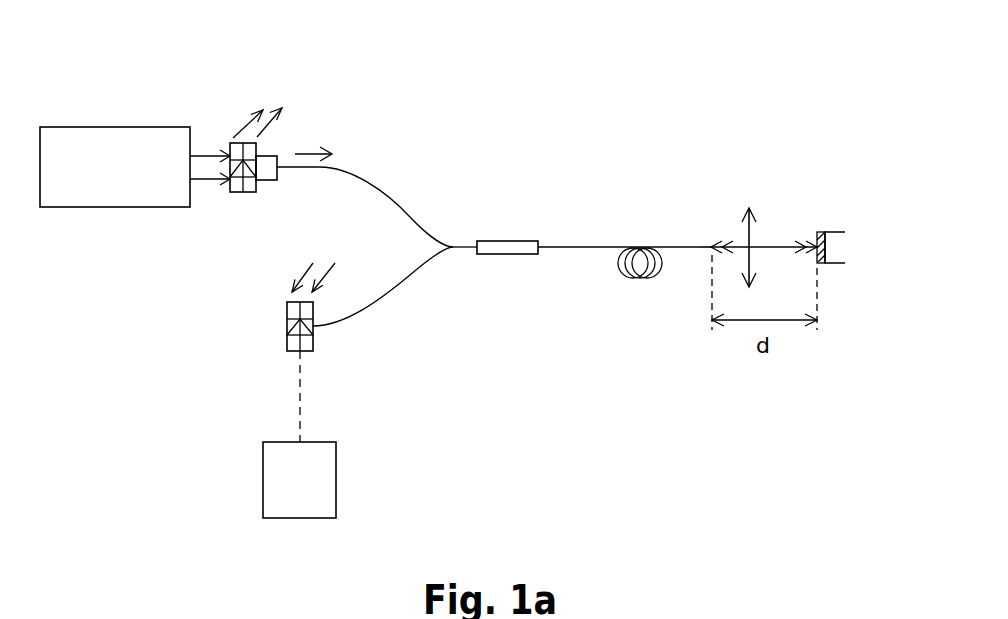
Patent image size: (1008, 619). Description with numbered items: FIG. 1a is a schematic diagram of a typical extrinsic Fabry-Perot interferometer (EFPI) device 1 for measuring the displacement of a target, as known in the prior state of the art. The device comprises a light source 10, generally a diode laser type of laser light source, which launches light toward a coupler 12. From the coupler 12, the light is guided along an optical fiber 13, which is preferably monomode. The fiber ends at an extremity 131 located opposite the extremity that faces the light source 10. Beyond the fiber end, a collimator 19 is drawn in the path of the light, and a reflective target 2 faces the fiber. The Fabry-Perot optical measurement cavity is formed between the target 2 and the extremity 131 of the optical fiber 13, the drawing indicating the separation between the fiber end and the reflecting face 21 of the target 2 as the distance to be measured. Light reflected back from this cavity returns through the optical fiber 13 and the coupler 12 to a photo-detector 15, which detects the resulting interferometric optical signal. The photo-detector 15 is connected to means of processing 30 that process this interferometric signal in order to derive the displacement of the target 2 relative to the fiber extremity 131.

The measuring system 1 is at (570, 368).
The reflective target 2 is at (847, 228).
The light source 10 is at (230, 122).
The coupler 12 is at (498, 247).
The optical fiber 13 is at (598, 247).
The extremity of the optical fiber 131 is at (710, 247).
The photo-detector 15 is at (322, 338).
The collimator 19 is at (745, 215).
The reflective surface / marker 21 is at (815, 230).
The means of processing 30 is at (322, 479).